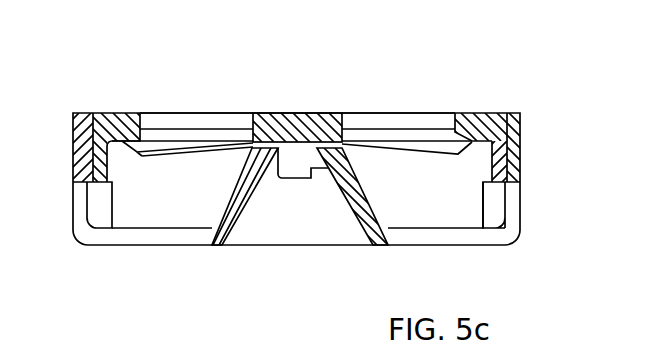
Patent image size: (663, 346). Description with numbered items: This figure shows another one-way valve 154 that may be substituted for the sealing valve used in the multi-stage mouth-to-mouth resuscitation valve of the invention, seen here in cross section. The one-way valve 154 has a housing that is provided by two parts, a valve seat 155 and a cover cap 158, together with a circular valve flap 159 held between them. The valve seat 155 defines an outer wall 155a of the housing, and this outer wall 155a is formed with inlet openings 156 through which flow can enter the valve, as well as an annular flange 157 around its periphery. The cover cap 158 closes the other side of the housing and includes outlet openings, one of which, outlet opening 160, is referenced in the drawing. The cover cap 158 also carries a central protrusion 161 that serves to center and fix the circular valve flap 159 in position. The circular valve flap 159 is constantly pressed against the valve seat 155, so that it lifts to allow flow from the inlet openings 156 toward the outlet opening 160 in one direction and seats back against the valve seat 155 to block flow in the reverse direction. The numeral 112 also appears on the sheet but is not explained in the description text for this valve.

The one-way valve 154 is at (214, 75).
The valve seat 155 is at (272, 113).
The outer wall 155a is at (480, 130).
The inlet openings 156 is at (380, 118).
The annular flange 157 is at (517, 160).
The cover cap 158 is at (355, 210).
The circular valve flap 159 is at (437, 153).
The outlet opening 160 is at (512, 227).
The central protrusion 161 is at (288, 182).
The sheet marker 112 is at (99, 335).